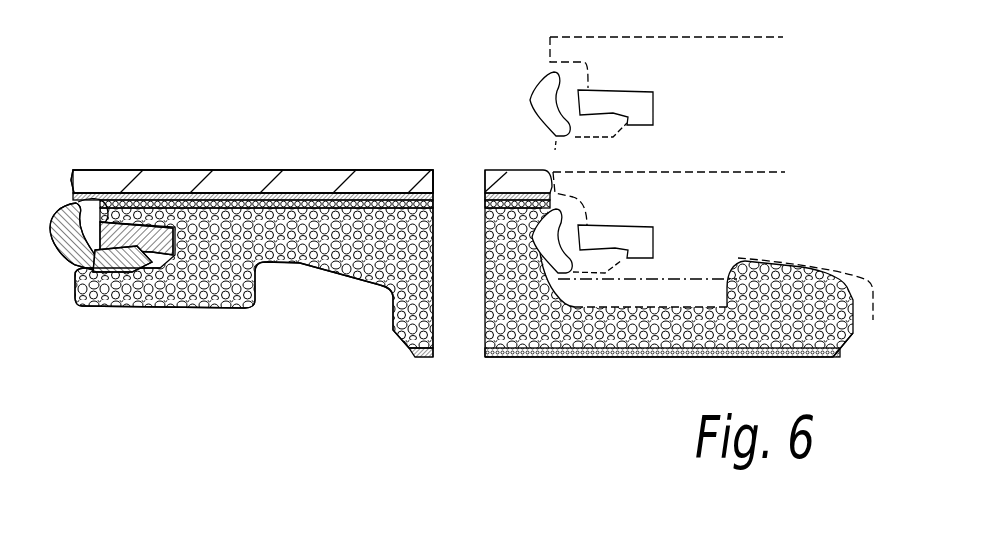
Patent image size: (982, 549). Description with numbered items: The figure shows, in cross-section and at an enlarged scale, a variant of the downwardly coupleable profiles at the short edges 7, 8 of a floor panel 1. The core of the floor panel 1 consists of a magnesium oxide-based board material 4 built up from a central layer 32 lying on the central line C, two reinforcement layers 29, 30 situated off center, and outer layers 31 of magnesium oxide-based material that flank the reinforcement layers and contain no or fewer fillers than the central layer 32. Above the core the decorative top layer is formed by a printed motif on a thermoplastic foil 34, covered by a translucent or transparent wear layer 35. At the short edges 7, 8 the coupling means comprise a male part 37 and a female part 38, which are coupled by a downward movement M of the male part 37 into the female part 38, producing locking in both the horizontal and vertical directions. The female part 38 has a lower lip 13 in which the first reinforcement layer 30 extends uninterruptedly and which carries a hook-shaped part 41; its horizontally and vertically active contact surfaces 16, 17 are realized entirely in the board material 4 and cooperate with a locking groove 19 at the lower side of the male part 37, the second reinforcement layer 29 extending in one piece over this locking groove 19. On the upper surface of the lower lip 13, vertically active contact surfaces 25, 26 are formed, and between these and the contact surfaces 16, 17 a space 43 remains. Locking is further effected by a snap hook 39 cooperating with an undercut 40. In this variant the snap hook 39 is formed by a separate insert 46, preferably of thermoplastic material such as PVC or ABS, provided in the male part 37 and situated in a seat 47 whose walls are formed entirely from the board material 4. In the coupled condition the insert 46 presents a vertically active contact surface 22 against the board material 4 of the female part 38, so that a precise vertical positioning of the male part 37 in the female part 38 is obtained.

The floor panel 1 is at (347, 160).
The magnesium oxide-based board material 4 is at (403, 347).
The short edge 7 is at (178, 358).
The short edge 8 is at (719, 207).
The lower lip 13 is at (645, 362).
The horizontally active contact surface 16 is at (266, 283).
The horizontally active contact surface 17 is at (732, 261).
The locking groove 19 is at (358, 298).
The vertically active contact surface 22 is at (518, 195).
The vertically active contact surface 25 is at (100, 308).
The vertically active contact surface 26 is at (574, 308).
The second reinforcement layer 29 is at (167, 193).
The first reinforcement layer 30 is at (508, 359).
The layer of magnesium oxide-based material 31 is at (833, 357).
The central layer 32 is at (270, 247).
The thermoplastic foil 34 is at (152, 197).
The wear layer 35 is at (243, 173).
The male part 37 is at (231, 351).
The female part 38 is at (688, 197).
The snap hook 39 is at (85, 201).
The undercut 40 is at (530, 235).
The hook-shaped part 41 is at (788, 284).
The space 43 is at (710, 308).
The separate insert 46 is at (118, 223).
The seat 47 is at (136, 255).
The central line C is at (665, 278).
The downward movement M is at (702, 88).